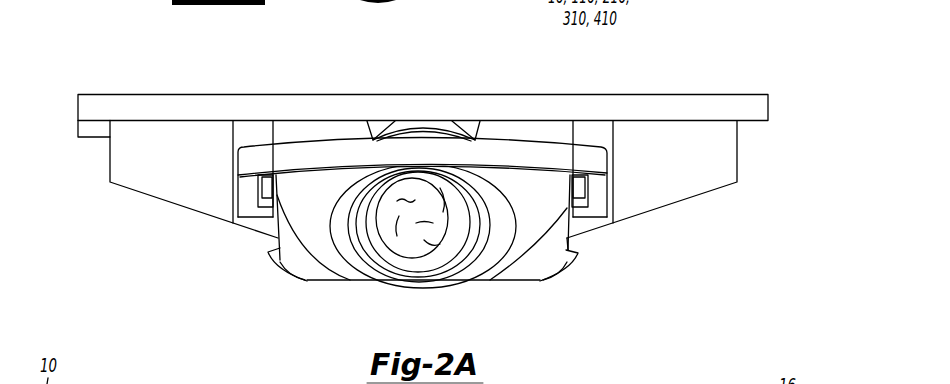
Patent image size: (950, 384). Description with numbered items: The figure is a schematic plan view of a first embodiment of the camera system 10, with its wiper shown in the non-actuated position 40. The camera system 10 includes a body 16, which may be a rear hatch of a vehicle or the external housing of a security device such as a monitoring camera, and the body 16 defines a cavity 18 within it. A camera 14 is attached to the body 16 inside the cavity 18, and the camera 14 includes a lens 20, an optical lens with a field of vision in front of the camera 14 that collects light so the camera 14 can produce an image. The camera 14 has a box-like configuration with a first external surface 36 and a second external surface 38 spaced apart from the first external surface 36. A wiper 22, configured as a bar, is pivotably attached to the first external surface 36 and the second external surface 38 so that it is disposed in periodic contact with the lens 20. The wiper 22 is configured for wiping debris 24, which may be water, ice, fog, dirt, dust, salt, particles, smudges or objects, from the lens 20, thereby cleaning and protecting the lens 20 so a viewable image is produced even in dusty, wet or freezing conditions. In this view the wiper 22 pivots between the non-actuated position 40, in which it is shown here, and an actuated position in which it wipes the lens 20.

The camera system 10 is at (72, 86).
The camera 14 is at (511, 281).
The body 16 is at (769, 107).
The cavity 18 is at (101, 131).
The lens 20 is at (421, 262).
The wiper 22 is at (527, 154).
The debris 24 is at (385, 229).
The first external surface 36 is at (537, 281).
The second external surface 38 is at (308, 281).
The non-actuated position 40 is at (586, 286).